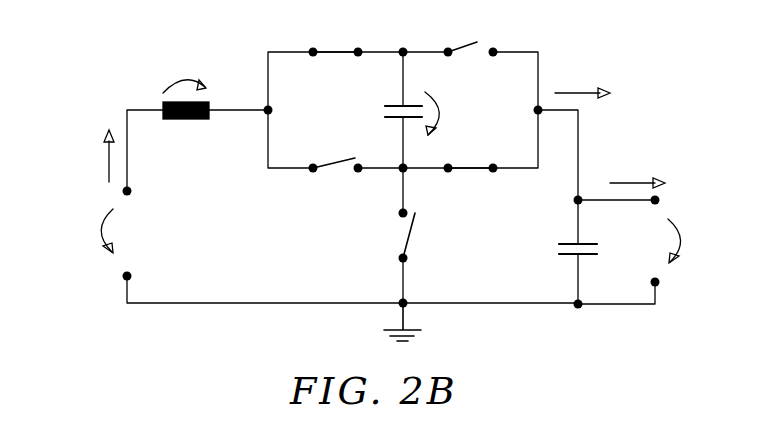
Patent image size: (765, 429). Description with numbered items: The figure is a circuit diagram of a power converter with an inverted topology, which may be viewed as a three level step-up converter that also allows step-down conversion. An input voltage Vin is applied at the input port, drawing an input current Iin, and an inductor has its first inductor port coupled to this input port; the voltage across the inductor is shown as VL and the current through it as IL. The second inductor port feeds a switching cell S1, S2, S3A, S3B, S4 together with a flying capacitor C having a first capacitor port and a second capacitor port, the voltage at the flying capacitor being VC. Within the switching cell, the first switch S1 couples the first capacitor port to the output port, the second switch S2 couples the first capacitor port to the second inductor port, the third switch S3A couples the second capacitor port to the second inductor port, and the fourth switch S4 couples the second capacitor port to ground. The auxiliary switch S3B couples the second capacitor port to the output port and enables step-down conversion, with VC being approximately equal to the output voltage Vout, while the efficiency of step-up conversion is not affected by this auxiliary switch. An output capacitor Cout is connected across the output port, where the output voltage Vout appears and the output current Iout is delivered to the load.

The first switch S1 is at (464, 38).
The second switch S2 is at (335, 38).
The third switch S3A is at (334, 180).
The auxiliary switch S3B is at (470, 185).
The fourth switch S4 is at (394, 235).
The flying capacitor C is at (391, 112).
The output capacitor Cout is at (589, 265).
The inductor voltage VL is at (184, 73).
The flying capacitor voltage VC is at (446, 113).
The input voltage Vin is at (84, 231).
The output voltage Vout is at (693, 241).
The input current Iin is at (91, 156).
The inductor current IL is at (582, 83).
The output current Iout is at (637, 172).